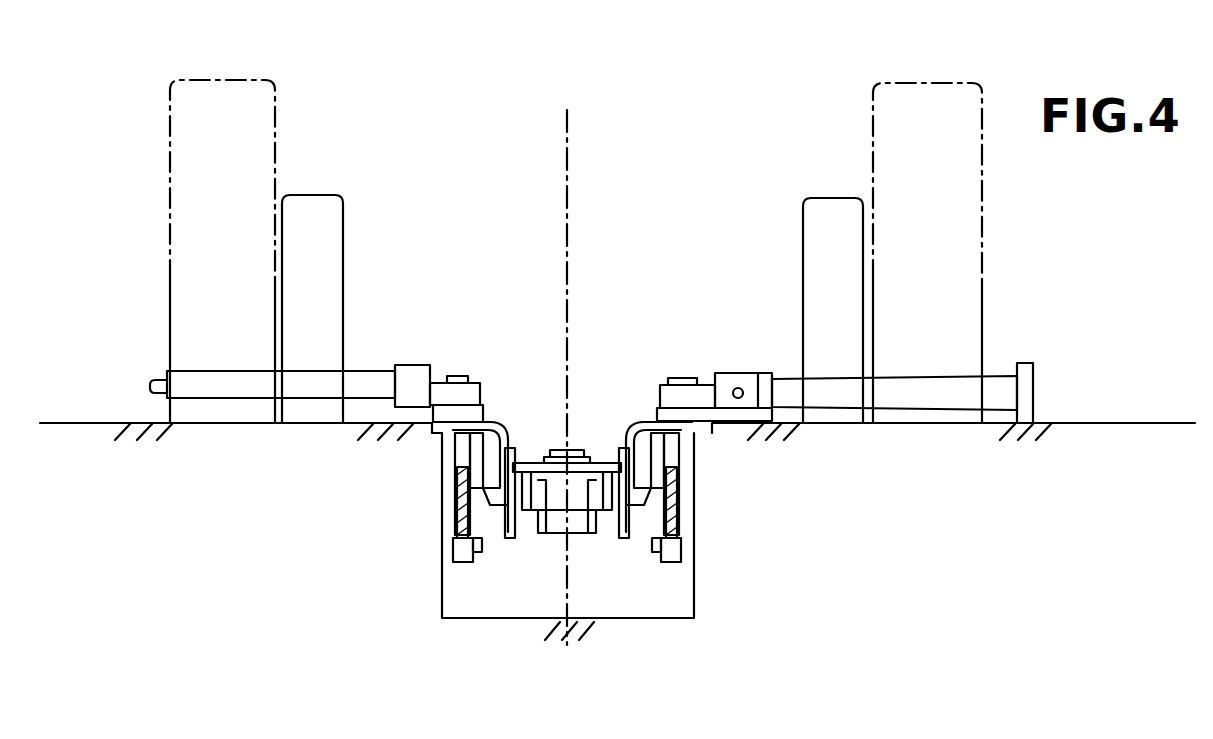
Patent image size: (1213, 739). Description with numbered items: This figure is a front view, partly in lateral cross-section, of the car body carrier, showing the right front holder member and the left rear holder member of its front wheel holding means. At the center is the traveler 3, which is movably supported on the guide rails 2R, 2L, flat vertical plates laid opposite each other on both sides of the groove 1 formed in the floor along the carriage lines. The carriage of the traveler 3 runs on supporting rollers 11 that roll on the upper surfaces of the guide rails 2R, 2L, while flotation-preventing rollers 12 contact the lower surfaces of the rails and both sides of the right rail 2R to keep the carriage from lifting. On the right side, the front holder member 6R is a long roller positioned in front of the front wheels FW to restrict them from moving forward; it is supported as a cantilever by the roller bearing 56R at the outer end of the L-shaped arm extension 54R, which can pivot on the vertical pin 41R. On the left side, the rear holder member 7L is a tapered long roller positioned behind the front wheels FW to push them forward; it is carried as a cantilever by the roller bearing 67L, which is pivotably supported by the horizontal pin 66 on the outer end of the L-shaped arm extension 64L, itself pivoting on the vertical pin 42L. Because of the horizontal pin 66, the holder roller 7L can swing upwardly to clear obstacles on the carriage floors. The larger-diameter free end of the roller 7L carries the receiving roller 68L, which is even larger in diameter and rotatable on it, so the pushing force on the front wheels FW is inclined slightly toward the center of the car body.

The front wheels FW is at (318, 215).
The groove 1 is at (470, 592).
The right guide rail 2R is at (458, 500).
The left guide rail 2L is at (683, 505).
The traveler 3 is at (530, 548).
The right front holder member 6R is at (207, 393).
The left rear holder member 7L is at (910, 390).
The supporting rollers 11 is at (467, 448).
The flotation-preventing rollers 12 is at (460, 556).
The vertical pin 41R is at (448, 376).
The vertical pin 42L is at (674, 383).
The L-shaped arm extension 54R is at (440, 395).
The roller bearing 56R is at (416, 380).
The L-shaped arm extension 64L is at (700, 395).
The horizontal pin 66 is at (740, 390).
The roller bearing 67L is at (772, 397).
The receiving roller 68L is at (1028, 382).